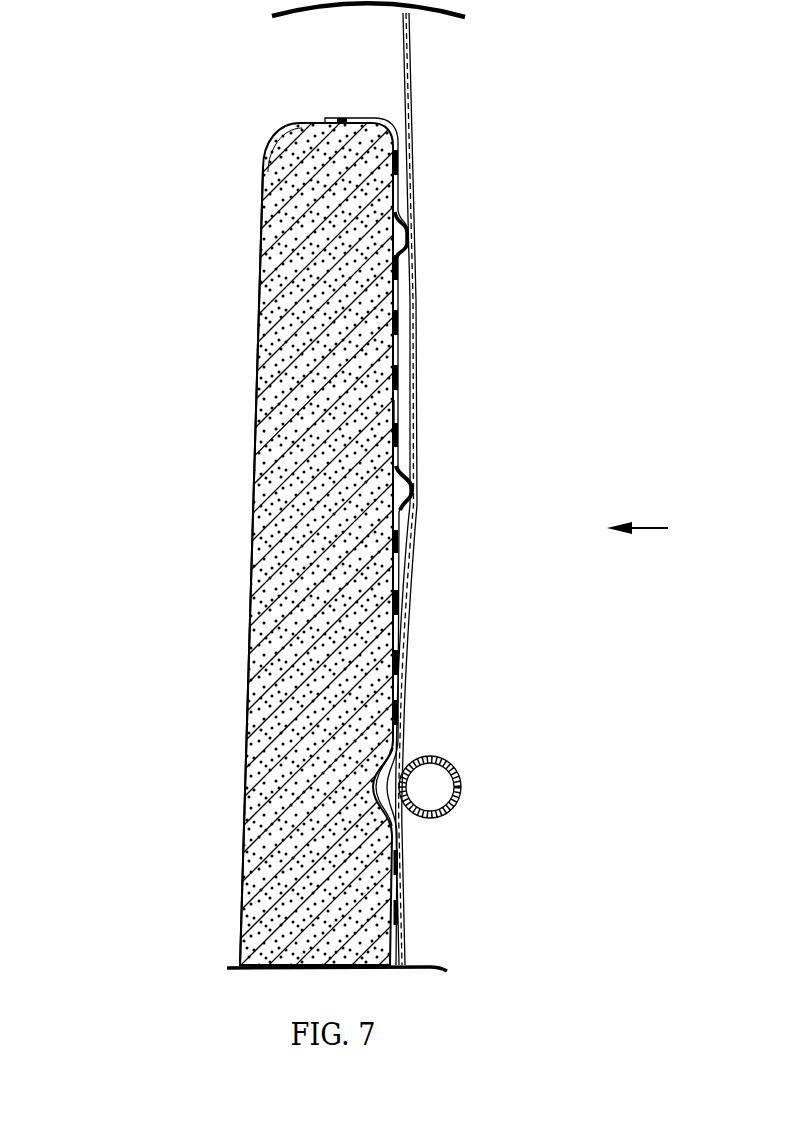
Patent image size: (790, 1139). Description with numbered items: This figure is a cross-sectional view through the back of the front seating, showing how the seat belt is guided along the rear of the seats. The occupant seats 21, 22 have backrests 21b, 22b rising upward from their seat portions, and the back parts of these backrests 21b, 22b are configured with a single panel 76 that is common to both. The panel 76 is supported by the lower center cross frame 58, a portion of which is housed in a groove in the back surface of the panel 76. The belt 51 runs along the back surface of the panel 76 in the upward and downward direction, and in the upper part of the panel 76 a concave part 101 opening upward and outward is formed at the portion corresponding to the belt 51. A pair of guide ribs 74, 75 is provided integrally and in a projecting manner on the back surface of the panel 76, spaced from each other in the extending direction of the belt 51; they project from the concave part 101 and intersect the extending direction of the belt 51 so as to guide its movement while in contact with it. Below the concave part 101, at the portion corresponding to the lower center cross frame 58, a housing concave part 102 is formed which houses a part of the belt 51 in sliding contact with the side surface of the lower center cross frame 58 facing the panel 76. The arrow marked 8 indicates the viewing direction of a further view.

The occupant seat 21 is at (395, 539).
The occupant seat 22 is at (395, 541).
The backrest 21b is at (161, 566).
The backrest 22b is at (252, 500).
The belt 51 is at (415, 344).
The concave part 101 is at (400, 297).
The guide rib 75 is at (406, 221).
The panel 76 is at (397, 417).
The guide rib 74 is at (410, 508).
The housing concave part 102 is at (386, 770).
The lower center cross frame 58 is at (462, 787).
The viewing direction of FIG. 8 is at (639, 500).